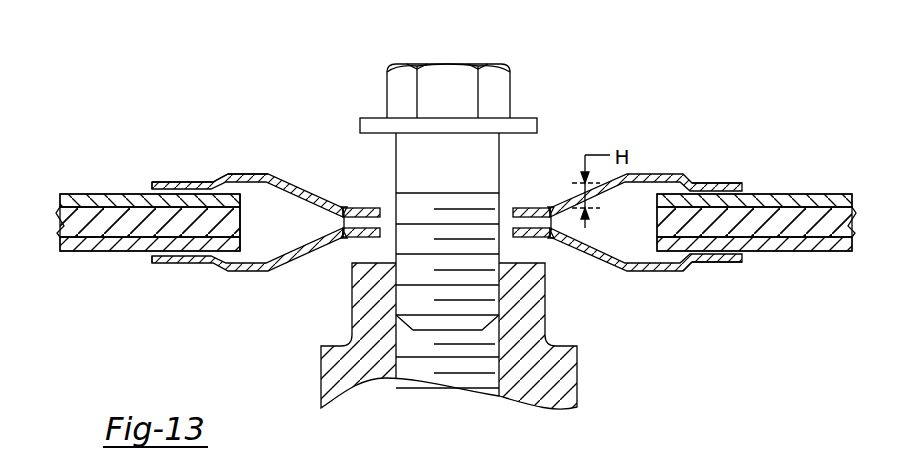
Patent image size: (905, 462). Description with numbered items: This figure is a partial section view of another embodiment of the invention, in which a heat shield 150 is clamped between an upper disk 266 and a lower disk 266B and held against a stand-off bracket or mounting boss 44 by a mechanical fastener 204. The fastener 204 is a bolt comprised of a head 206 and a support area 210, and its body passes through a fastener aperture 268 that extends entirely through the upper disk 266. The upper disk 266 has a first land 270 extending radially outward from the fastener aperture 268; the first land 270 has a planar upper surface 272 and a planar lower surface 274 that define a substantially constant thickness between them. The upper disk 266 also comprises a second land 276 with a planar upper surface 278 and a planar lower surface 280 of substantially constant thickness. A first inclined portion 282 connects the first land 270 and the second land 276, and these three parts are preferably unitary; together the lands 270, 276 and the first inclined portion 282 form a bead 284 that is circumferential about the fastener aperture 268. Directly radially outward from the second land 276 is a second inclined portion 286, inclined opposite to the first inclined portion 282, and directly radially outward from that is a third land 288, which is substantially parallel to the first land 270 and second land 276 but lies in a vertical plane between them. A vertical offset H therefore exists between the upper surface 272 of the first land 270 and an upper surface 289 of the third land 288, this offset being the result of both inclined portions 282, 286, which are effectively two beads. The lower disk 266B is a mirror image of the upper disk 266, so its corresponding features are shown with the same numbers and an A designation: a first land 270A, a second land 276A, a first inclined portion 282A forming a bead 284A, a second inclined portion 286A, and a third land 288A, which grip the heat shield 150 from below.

The mounting boss 44 is at (560, 402).
The heat shield 150 is at (46, 195).
The mechanical fastener 204 is at (417, 63).
The head 206 is at (452, 80).
The support area 210 is at (525, 118).
The upper disk 266 is at (150, 181).
The lower disk 266B is at (140, 258).
The fastener aperture 268 is at (388, 212).
The first land 270 is at (345, 207).
The first land of lower disk 270A is at (340, 255).
The planar upper surface 272 is at (370, 208).
The planar lower surface 274 is at (341, 228).
The second land 276 is at (228, 174).
The second land of lower disk 276A is at (244, 271).
The planar upper surface 278 is at (242, 174).
The planar lower surface 280 is at (243, 194).
The first inclined portion 282 is at (322, 219).
The first inclined portion of lower disk 282A is at (577, 250).
The bead 284 is at (633, 167).
The bead of lower disk 284A is at (648, 271).
The second inclined portion 286 is at (205, 181).
The second inclined portion of lower disk 286A is at (686, 268).
The third land 288 is at (175, 181).
The third land of lower disk 288A is at (722, 263).
The upper surface of third land 289 is at (733, 183).